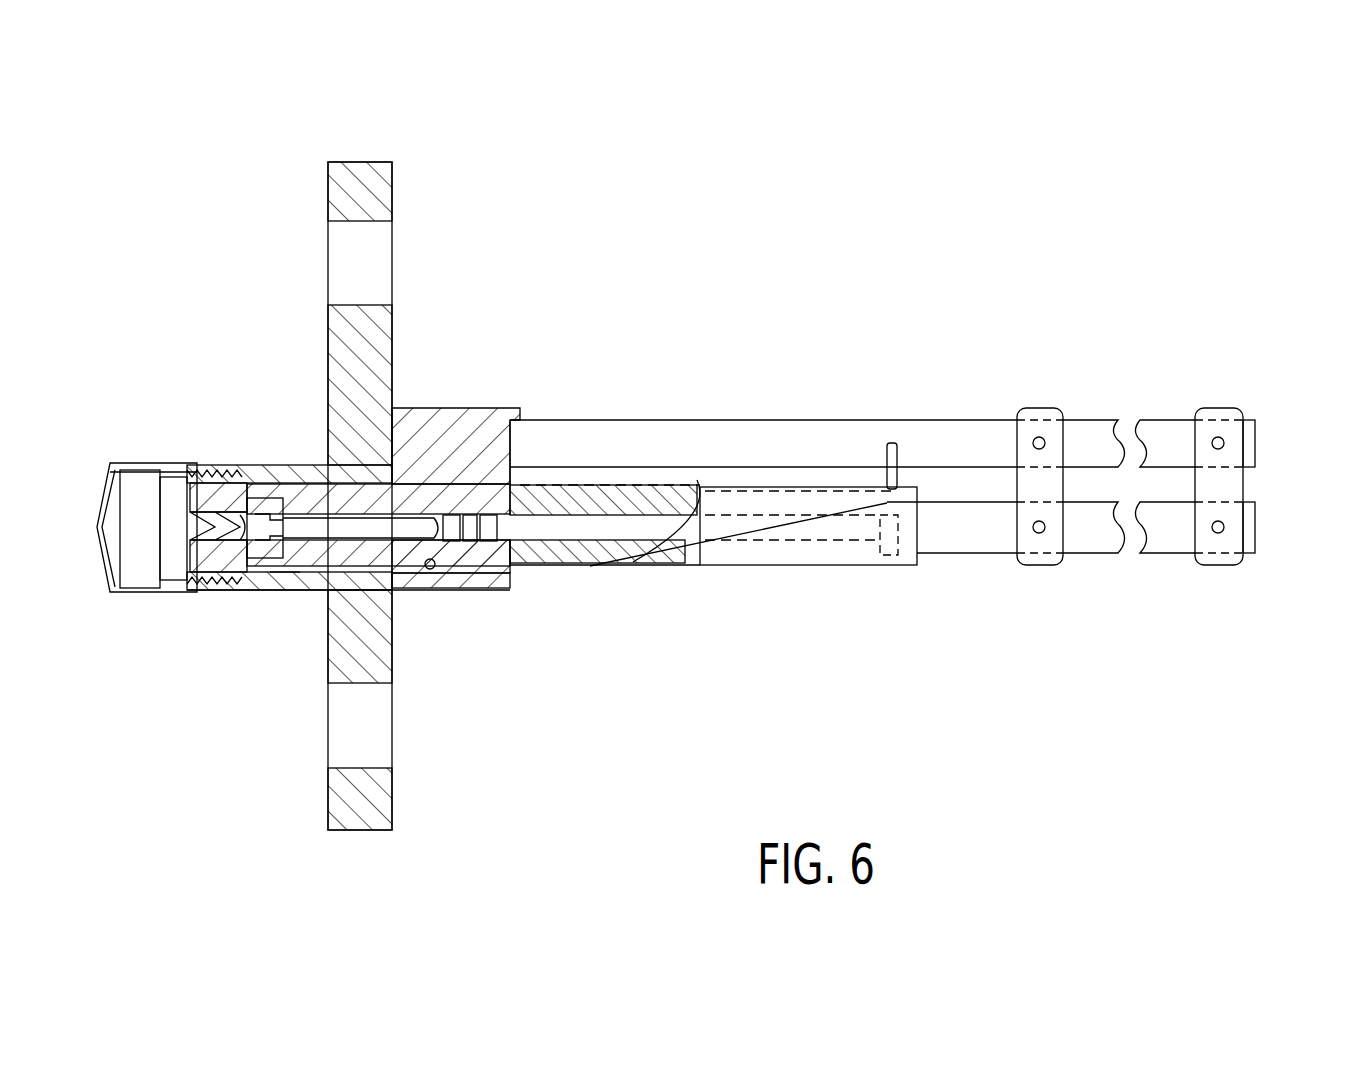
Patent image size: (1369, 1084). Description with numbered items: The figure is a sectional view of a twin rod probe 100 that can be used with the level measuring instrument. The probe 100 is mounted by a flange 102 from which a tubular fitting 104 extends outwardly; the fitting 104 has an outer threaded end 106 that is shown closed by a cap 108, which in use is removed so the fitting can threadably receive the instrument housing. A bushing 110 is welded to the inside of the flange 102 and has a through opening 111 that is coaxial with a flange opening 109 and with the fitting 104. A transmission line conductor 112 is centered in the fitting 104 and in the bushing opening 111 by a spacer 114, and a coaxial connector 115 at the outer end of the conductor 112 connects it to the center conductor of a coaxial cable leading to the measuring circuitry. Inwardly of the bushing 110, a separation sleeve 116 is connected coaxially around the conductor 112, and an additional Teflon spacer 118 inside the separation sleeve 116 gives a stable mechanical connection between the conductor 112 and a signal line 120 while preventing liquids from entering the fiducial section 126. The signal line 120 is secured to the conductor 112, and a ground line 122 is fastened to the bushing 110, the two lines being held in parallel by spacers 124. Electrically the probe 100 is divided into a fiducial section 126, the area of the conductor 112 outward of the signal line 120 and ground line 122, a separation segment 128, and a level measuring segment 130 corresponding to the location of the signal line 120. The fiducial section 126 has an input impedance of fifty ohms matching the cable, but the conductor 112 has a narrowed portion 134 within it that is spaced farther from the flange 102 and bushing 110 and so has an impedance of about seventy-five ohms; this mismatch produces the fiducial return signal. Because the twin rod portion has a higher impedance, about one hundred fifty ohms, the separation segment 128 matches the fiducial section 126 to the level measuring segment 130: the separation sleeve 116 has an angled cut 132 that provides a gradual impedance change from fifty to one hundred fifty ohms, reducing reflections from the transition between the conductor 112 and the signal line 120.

The twin rod probe 100 is at (920, 246).
The flange 102 is at (328, 332).
The tubular fitting 104 is at (213, 468).
The outer threaded end 106 is at (182, 466).
The cap 108 is at (104, 490).
The flange opening 109 is at (320, 463).
The bushing 110 is at (447, 405).
The through opening 111 is at (428, 570).
The transmission line conductor 112 is at (543, 530).
The spacer 114 is at (472, 556).
The coaxial connector 115 is at (181, 557).
The separation sleeve 116 is at (612, 485).
The Teflon spacer 118 is at (665, 557).
The signal line 120 is at (1089, 545).
The ground line 122 is at (1083, 428).
The spacers 124 is at (1045, 417).
The fiducial section 126 is at (235, 592).
The separation segment 128 is at (540, 480).
The level measuring segment 130 is at (1247, 467).
The angled cut 132 is at (770, 540).
The narrowed portion 134 is at (283, 577).